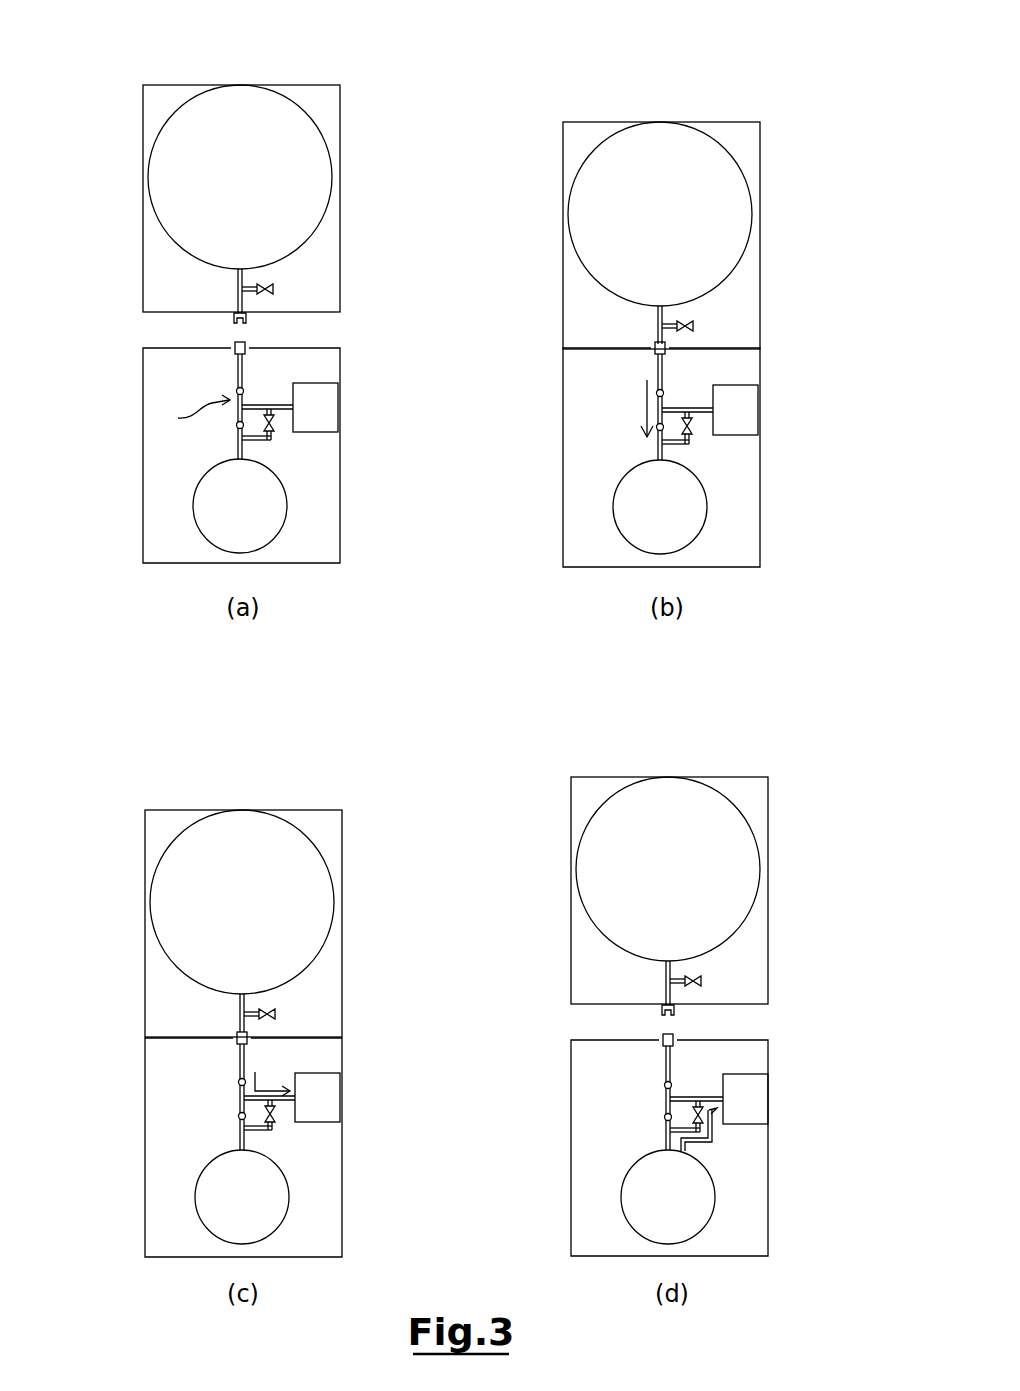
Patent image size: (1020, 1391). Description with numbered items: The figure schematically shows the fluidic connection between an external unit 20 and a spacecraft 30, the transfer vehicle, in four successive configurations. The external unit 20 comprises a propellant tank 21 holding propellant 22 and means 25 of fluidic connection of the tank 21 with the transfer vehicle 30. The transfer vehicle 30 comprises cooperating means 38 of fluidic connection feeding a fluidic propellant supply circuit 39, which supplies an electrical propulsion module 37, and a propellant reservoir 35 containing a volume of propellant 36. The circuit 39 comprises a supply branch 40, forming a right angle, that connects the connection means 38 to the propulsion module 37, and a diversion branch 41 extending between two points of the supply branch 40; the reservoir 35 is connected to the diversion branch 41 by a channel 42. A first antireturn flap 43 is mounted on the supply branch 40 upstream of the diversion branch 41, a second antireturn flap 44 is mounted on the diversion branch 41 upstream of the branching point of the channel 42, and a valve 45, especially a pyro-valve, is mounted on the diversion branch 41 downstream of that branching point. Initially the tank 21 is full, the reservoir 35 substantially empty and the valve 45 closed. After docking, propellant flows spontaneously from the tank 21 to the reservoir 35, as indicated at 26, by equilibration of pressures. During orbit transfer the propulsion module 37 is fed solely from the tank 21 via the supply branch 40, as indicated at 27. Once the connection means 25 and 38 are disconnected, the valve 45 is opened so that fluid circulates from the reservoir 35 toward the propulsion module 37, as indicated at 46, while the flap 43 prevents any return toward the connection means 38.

The external unit 20 is at (163, 85).
The propellant tank 21 is at (317, 125).
The fuel 22 is at (225, 192).
The means of fluidic connection 25 is at (246, 314).
The transfer of propellant 26 is at (645, 400).
The supply flow from tank 27 is at (270, 1076).
The spacecraft 30 is at (143, 515).
The propellant reservoir 35 is at (283, 527).
The volume of propellant 36 is at (645, 521).
The electrical propulsion module 37 is at (320, 383).
The means of fluidic connection 38 is at (235, 345).
The fluidic propellant supply circuit 39 is at (184, 414).
The supply branch 40 is at (244, 386).
The diversion branch 41 is at (269, 433).
The channel 42 is at (250, 440).
The first antireturn flap 43 is at (237, 391).
The second antireturn flap 44 is at (237, 425).
The valve 45 is at (272, 417).
The flow from reservoir 46 is at (710, 1136).